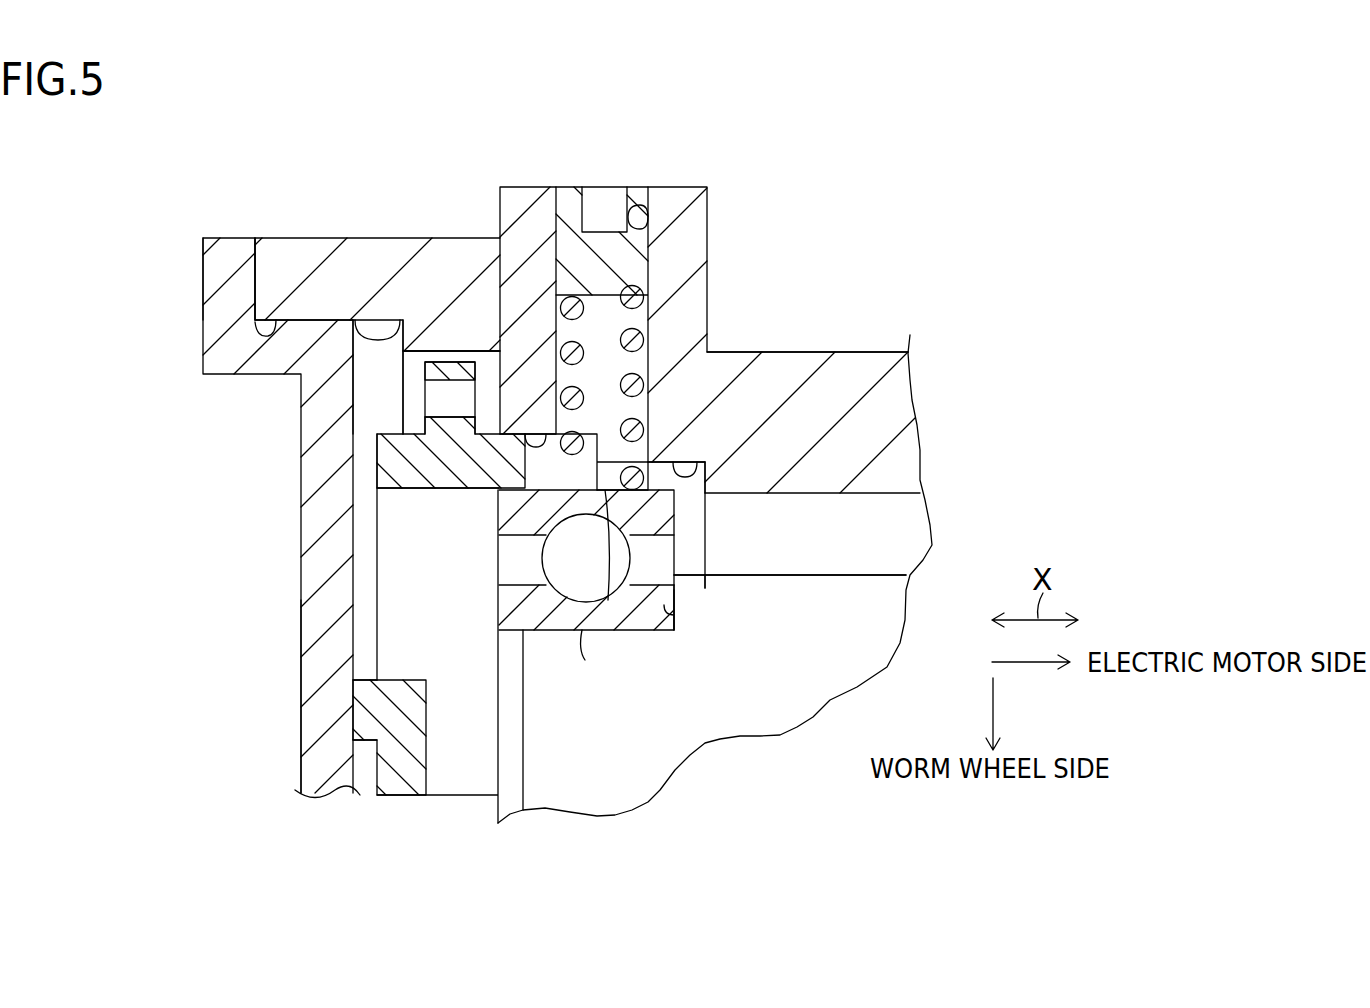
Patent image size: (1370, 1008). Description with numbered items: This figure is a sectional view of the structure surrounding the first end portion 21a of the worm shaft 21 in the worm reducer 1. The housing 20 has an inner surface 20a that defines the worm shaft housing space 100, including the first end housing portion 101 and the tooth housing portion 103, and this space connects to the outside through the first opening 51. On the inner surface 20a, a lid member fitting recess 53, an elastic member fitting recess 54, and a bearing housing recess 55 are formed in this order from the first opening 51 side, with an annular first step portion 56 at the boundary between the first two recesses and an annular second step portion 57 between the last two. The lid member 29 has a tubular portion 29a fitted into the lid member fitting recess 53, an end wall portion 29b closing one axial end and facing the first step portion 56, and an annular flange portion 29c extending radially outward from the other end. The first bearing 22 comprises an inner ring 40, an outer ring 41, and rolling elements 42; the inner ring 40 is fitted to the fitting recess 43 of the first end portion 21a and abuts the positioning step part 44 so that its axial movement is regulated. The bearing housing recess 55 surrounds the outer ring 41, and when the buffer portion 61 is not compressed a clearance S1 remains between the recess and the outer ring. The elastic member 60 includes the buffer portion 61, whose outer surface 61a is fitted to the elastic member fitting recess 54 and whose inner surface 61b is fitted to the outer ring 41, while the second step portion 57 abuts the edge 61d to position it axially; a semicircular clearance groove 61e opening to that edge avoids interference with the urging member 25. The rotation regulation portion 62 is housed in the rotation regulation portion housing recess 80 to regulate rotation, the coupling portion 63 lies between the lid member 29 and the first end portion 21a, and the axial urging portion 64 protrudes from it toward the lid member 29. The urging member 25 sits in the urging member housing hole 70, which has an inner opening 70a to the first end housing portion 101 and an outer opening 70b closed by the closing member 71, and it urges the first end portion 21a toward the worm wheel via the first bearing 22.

The worm reducer 1 is at (905, 322).
The housing 20 is at (850, 352).
The inner surface 20a is at (887, 496).
The worm shaft 21 is at (862, 562).
The first end portion 21a is at (550, 797).
The first bearing 22 is at (552, 598).
The urging member 25 is at (647, 343).
The lid member 29 is at (296, 576).
The tubular portion 29a is at (283, 360).
The end wall portion 29b is at (312, 696).
The annular flange portion 29c is at (229, 250).
The inner ring 40 is at (542, 625).
The outer ring 41 is at (515, 506).
The rolling elements 42 is at (560, 557).
The fitting recess 43 is at (582, 628).
The positioning step part 44 is at (667, 602).
The first opening 51 is at (264, 334).
The lid member fitting recess 53 is at (348, 343).
The elastic member fitting recess 54 is at (490, 390).
The bearing housing recess 55 is at (715, 378).
The first step portion 56 is at (403, 328).
The second step portion 57 is at (508, 420).
The elastic member 60 is at (372, 639).
The buffer portion 61 is at (410, 475).
The outer surface 61a is at (530, 440).
The inner surface 61b is at (498, 507).
The edge 61d is at (604, 445).
The clearance groove 61e is at (545, 473).
The rotation regulation portion 62 is at (463, 372).
The coupling portion 63 is at (397, 770).
The axial urging portion 64 is at (362, 727).
The urging member housing hole 70 is at (635, 300).
The inner opening 70a is at (610, 602).
The outer opening 70b is at (650, 235).
The closing member 71 is at (637, 196).
The rotation regulation portion housing recess 80 is at (362, 370).
The worm shaft housing space 100 is at (840, 550).
The first end housing portion 101 is at (682, 484).
The tooth housing portion 103 is at (822, 513).
The clearance S1 is at (720, 632).